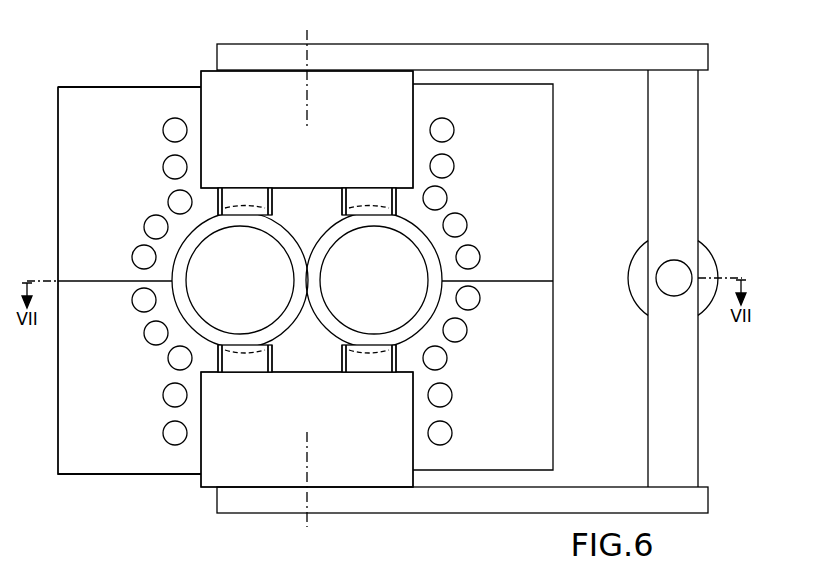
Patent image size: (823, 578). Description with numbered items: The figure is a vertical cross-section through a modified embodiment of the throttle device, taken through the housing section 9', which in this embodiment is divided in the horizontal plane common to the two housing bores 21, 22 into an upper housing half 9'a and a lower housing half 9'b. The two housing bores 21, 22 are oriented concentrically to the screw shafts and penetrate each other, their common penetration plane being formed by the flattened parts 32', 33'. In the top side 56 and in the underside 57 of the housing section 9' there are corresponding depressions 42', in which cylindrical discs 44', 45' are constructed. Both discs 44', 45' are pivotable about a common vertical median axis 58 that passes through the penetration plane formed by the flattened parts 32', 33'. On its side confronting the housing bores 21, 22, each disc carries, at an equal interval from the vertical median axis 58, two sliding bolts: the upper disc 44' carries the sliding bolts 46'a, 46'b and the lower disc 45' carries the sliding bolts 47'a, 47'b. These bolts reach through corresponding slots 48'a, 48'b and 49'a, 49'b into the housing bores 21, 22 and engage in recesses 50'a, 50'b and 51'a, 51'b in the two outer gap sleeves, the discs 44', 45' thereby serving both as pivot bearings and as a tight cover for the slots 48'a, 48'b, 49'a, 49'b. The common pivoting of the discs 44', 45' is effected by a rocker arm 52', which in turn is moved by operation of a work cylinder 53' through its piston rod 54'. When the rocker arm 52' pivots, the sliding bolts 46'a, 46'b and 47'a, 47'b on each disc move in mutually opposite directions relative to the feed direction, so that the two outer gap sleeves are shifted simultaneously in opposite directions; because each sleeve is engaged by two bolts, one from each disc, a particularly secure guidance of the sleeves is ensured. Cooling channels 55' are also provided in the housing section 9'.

The housing section 9' is at (305, 241).
The upper housing half 9'a is at (107, 184).
The lower housing half 9'b is at (105, 377).
The top side 56 is at (123, 87).
The underside 57 is at (108, 474).
The depressions 42' is at (285, 280).
The cylindrical disc 44' is at (307, 97).
The cylindrical disc 45' is at (307, 460).
The vertical median axis 58 is at (305, 42).
The rocker arm 52' is at (462, 260).
The housing bore 21 is at (171, 305).
The housing bore 22 is at (443, 305).
The flattened part 32' is at (246, 280).
The flattened part 33' is at (368, 280).
The sliding bolt 46'a is at (242, 182).
The sliding bolt 46'b is at (374, 182).
The sliding bolt 47'a is at (240, 377).
The sliding bolt 47'b is at (375, 377).
The slot 48'a is at (159, 199).
The slot 48'b is at (454, 197).
The slot 49'a is at (159, 359).
The slot 49'b is at (456, 358).
The recess 50'a is at (289, 182).
The recess 50'b is at (332, 182).
The recess 51'a is at (282, 377).
The recess 51'b is at (336, 377).
The cooling channels 55' is at (323, 281).
The work cylinder 53' is at (655, 271).
The piston rod 54' is at (703, 261).